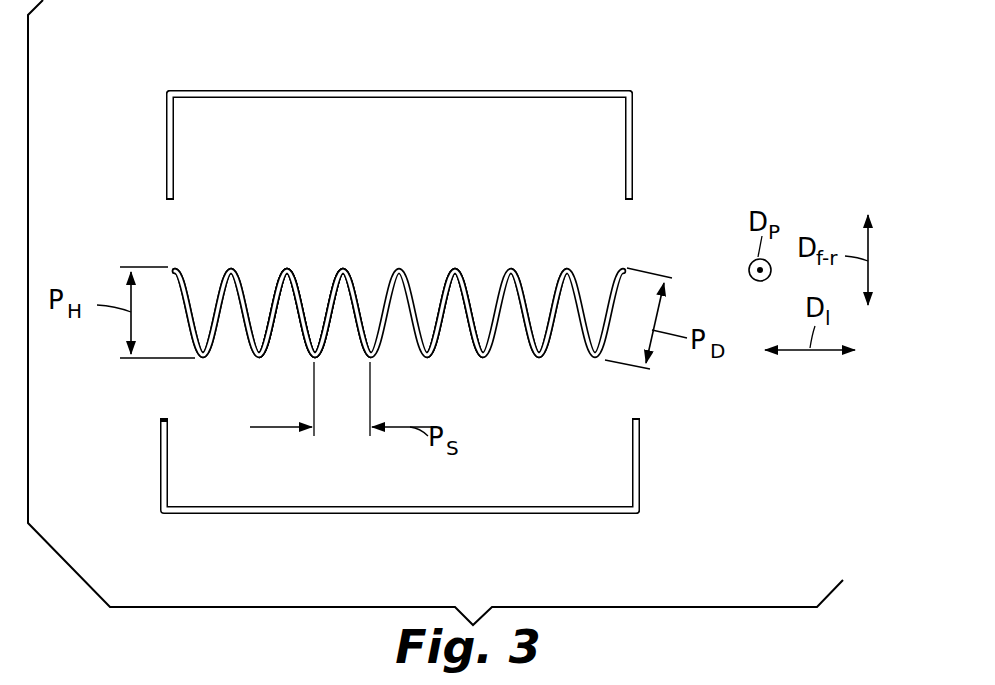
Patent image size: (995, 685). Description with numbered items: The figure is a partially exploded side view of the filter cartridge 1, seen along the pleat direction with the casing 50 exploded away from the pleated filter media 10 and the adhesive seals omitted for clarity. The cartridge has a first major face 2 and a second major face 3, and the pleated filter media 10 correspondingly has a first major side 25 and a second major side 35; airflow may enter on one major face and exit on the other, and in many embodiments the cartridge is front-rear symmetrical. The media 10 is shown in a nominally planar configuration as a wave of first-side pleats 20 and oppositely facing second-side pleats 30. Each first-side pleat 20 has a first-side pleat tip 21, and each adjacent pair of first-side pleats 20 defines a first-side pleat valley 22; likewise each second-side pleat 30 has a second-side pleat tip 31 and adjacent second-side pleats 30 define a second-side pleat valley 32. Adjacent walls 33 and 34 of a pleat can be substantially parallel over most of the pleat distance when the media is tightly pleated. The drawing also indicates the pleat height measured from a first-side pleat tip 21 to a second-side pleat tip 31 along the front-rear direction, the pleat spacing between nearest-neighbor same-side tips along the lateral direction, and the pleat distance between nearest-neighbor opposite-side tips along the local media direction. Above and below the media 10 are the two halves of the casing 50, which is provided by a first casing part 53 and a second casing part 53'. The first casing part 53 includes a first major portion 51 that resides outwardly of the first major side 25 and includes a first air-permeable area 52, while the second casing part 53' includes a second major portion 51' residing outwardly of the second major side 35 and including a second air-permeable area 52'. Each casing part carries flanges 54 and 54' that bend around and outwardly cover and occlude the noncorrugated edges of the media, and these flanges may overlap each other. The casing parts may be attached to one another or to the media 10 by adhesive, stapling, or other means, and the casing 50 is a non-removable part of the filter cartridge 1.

The filter cartridge 1 is at (115, 78).
The first major face/side 2 is at (332, 548).
The second major face/side 3 is at (287, 62).
The pleated filter media 10 is at (222, 282).
The first-side pleat 20 is at (200, 360).
The first-side pleat tip 21 is at (258, 360).
The first-side pleat valley 22 is at (457, 338).
The first major side of pleated filter media 25 is at (540, 358).
The second-side pleat 30 is at (276, 284).
The second-side pleat tip 31 is at (286, 268).
The second-side pleat valley 32 is at (314, 293).
The pleat wall 33 is at (326, 280).
The pleat wall 34 is at (352, 284).
The second major side of pleated filter media 35 is at (455, 270).
The casing 50 is at (197, 90).
The first major portion 51 is at (560, 540).
The second major portion 51' is at (555, 63).
The first air-permeable area 52 is at (400, 540).
The second air-permeable area 52' is at (400, 63).
The first casing part 53 is at (240, 541).
The second casing part 53' is at (620, 76).
The flange 54 is at (133, 460).
The flange 54' is at (664, 151).